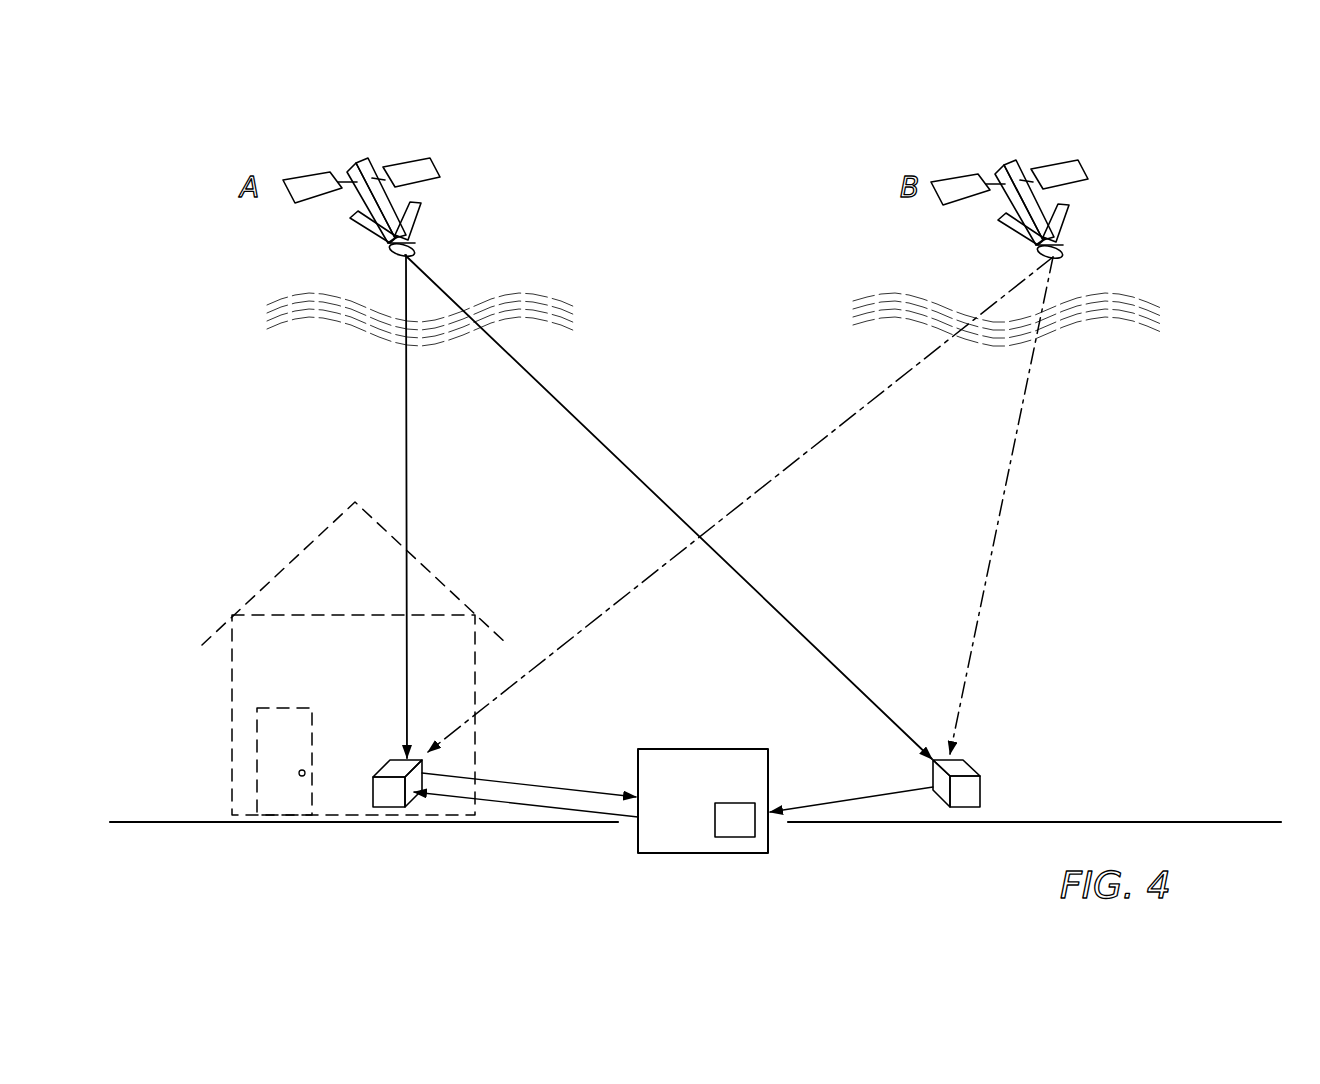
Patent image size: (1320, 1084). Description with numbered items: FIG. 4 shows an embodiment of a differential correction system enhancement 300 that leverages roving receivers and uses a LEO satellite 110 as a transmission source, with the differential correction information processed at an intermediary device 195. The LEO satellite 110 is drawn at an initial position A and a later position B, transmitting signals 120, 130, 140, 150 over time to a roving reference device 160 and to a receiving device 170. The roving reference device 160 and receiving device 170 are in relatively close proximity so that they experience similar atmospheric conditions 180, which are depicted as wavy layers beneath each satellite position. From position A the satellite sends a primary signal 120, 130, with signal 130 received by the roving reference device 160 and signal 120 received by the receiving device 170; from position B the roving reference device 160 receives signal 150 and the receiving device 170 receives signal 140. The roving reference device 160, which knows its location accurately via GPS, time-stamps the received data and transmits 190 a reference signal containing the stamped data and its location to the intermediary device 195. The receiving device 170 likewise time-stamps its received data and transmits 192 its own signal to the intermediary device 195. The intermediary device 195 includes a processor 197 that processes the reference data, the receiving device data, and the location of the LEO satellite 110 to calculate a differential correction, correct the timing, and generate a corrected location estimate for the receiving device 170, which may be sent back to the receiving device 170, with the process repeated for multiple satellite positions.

The LEO satellite 110 is at (348, 157).
The signal 120 is at (405, 447).
The signal 130 is at (555, 397).
The signal 140 is at (842, 425).
The signal 150 is at (1013, 448).
The roving reference device (RRD) 160 is at (965, 760).
The receiving device (RD) 170 is at (398, 757).
The atmospheric conditions 180 is at (306, 284).
The transmitting (RRD signal) 190 is at (858, 800).
The transmitting (RD signal) 192 is at (528, 787).
The intermediary device 195 is at (702, 749).
The processor 197 is at (748, 837).
The differential correction system enhancement 300 is at (1132, 524).